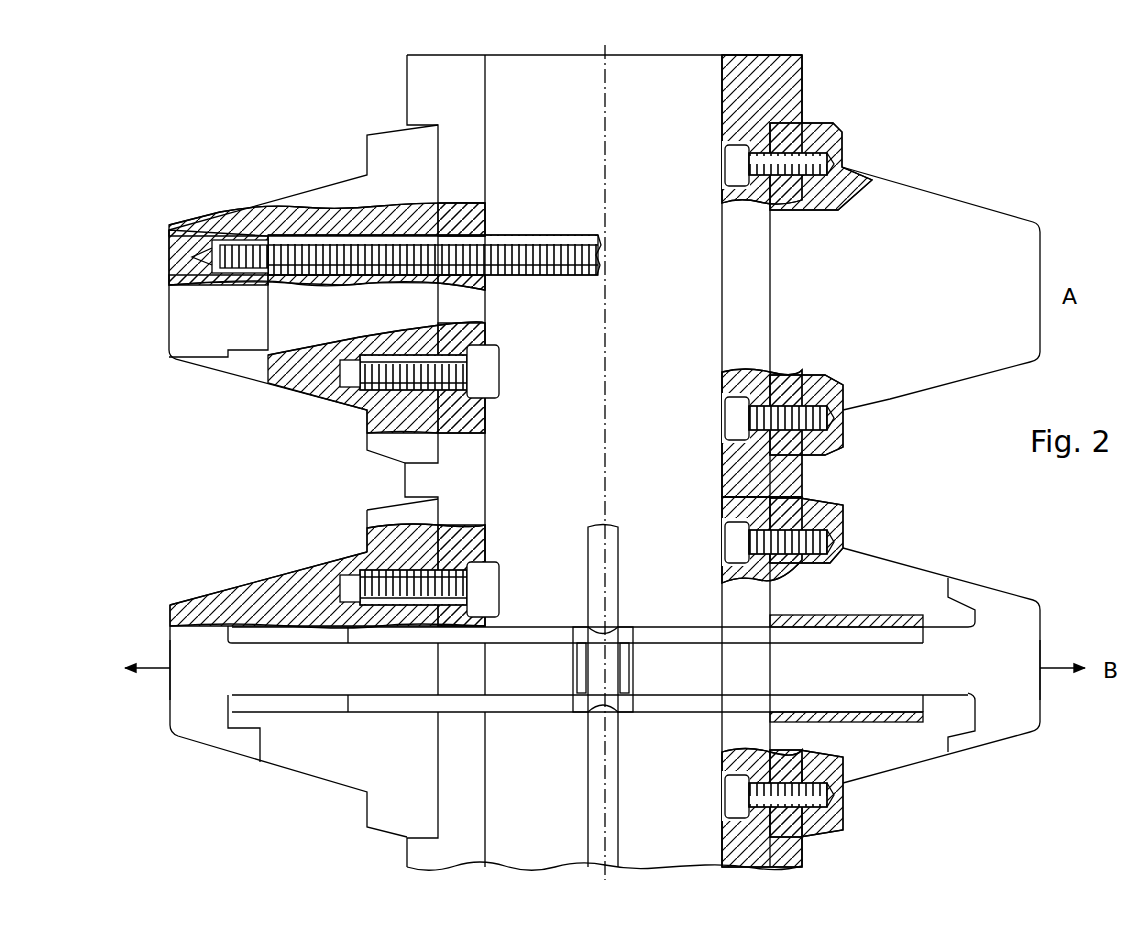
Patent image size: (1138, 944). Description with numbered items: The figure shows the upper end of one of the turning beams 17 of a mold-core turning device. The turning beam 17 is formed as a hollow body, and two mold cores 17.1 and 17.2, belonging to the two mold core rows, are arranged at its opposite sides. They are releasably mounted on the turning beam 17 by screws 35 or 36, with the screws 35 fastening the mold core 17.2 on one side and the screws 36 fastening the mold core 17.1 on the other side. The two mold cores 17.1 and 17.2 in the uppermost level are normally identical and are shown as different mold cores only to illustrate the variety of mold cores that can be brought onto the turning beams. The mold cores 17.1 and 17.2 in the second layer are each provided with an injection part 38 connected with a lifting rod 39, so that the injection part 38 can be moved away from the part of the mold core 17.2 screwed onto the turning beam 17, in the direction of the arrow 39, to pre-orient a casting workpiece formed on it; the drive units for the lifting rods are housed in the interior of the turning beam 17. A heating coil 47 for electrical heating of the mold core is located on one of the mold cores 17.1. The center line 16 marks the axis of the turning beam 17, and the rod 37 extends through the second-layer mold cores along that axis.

The axis / center line 16 is at (605, 140).
The turning beam 17 is at (775, 103).
The mold core 17.1 is at (903, 203).
The mold core 17.2 is at (330, 210).
The screw 35 is at (485, 372).
The screw 36 is at (728, 165).
The shaft 37 is at (683, 650).
The injection part 38 is at (183, 645).
The lifting rod 39 is at (150, 675).
The heating coil 47 is at (898, 725).